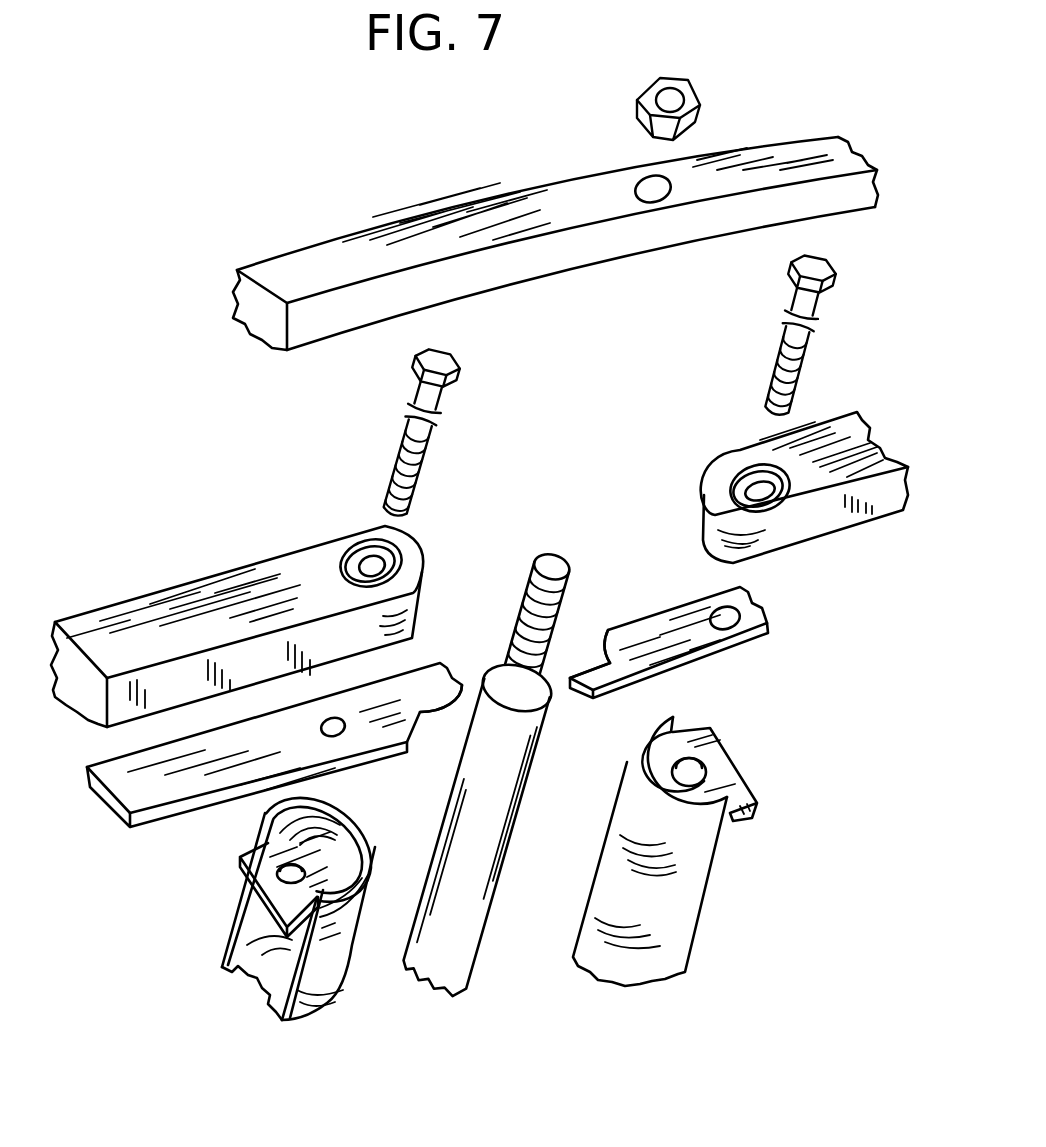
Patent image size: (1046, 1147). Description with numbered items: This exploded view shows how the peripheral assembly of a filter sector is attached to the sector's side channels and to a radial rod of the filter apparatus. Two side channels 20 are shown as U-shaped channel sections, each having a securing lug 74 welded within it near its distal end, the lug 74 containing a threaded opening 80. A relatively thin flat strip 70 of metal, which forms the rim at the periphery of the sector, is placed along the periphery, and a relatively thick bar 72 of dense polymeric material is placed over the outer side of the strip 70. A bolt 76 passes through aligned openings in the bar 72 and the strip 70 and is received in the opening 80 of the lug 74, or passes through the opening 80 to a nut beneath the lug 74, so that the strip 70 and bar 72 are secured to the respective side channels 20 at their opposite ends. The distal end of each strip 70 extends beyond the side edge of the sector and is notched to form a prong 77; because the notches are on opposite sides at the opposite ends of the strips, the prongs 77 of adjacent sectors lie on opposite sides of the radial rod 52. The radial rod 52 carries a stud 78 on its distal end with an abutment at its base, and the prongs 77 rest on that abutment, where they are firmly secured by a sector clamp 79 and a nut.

The side channel 20 is at (263, 830).
The radial rod 52 is at (490, 752).
The flat strip 70 is at (140, 787).
The bar 72 is at (137, 637).
The securing lug 74 is at (267, 868).
The bolt 76 is at (402, 450).
The prong 77 is at (443, 657).
The stud 78 is at (559, 614).
The sector clamp 79 is at (347, 260).
The threaded opening 80 is at (287, 880).